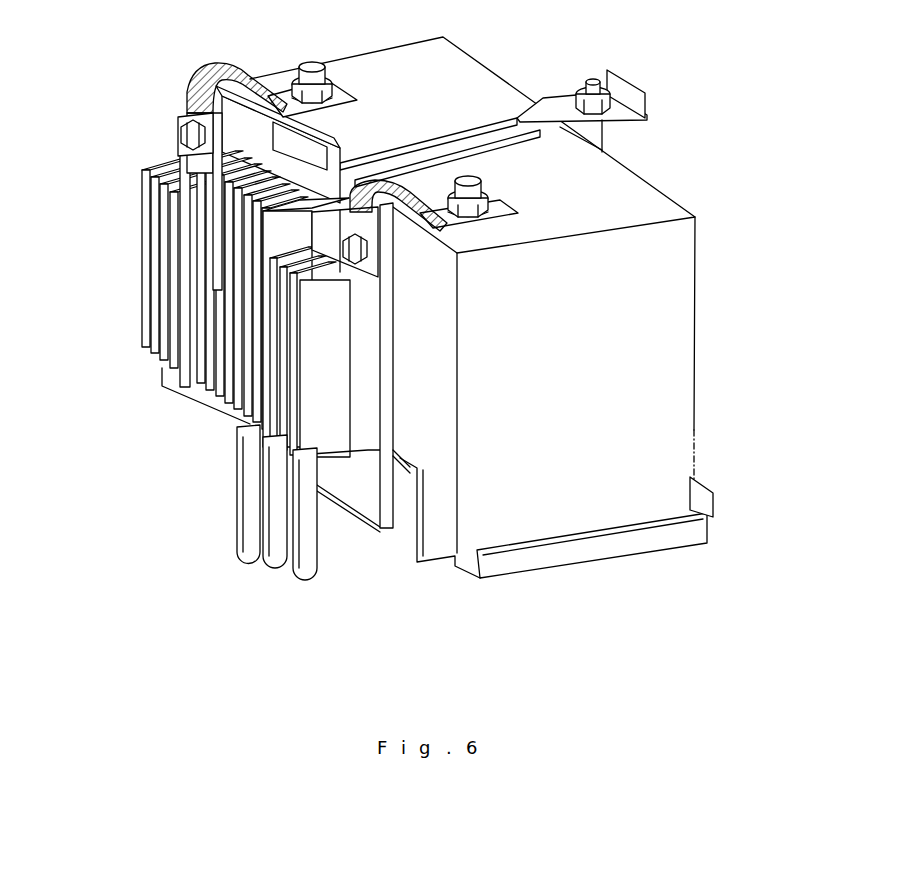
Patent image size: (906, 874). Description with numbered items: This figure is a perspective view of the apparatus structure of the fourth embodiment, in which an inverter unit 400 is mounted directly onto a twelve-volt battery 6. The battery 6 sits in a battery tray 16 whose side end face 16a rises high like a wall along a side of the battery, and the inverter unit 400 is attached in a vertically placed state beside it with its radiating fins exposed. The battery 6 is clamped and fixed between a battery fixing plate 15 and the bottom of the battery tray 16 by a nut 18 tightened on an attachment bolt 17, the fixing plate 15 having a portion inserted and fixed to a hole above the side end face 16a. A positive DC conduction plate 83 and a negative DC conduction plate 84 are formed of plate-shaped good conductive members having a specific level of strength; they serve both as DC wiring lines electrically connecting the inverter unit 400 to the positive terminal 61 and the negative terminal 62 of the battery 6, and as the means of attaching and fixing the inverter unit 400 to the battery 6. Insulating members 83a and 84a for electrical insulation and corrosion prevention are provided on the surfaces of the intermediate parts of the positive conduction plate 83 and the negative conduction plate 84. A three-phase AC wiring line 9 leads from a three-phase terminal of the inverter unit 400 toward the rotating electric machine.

The 12V battery 6 is at (680, 308).
The three-phase AC wiring line 9 is at (330, 590).
The battery fixing plate 15 is at (622, 115).
The battery tray 16 is at (702, 535).
The side end face 16a is at (403, 543).
The attachment bolt 17 is at (600, 140).
The nut 18 is at (583, 90).
The positive terminal 61 is at (468, 183).
The negative terminal 62 is at (308, 60).
The positive DC conduction plate 83 is at (500, 206).
The insulating member 83a is at (383, 180).
The negative DC conduction plate 84 is at (343, 85).
The insulating member 84a is at (221, 60).
The inverter unit 400 is at (135, 265).